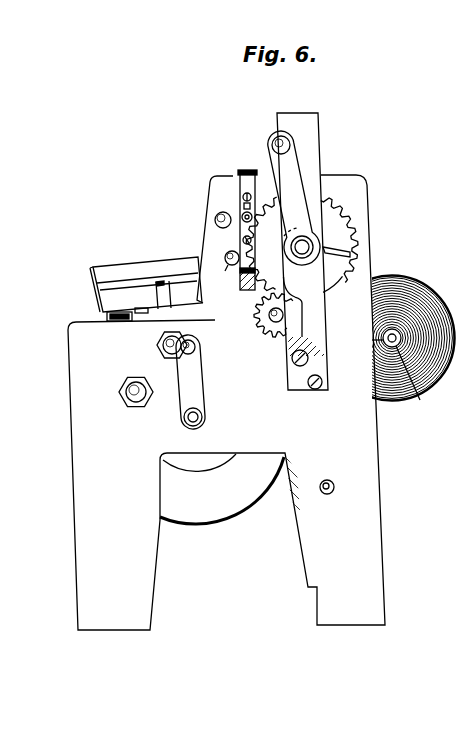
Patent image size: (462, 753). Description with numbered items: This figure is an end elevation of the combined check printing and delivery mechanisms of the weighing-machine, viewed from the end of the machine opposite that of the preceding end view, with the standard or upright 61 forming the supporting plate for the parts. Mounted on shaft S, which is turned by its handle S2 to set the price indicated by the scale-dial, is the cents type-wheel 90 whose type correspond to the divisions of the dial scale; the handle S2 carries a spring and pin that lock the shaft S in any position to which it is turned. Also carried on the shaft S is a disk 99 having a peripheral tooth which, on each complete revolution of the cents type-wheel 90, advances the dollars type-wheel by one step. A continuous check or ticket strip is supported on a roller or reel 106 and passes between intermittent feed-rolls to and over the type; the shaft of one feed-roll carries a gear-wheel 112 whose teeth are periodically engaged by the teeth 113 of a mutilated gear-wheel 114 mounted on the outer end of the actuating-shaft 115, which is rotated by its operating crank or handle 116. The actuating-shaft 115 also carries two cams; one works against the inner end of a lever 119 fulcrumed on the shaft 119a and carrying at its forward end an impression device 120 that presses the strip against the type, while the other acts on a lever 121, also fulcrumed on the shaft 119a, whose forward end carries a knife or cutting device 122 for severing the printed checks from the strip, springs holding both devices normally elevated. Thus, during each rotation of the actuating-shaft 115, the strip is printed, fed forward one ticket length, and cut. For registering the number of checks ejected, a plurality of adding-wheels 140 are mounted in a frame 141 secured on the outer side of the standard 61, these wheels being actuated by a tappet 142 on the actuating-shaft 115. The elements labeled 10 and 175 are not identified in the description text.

The standard 61 is at (368, 514).
The spiral motor spring 10 is at (433, 378).
The roller or reel 106 is at (420, 401).
The guide bar 175 is at (303, 120).
The operating crank or handle 116 is at (297, 146).
The actuating-shaft 115 is at (300, 257).
The teeth 113 is at (328, 198).
The mutilated gear-wheel 114 is at (330, 277).
The tappet 142 is at (333, 250).
The gear-wheel 112 is at (265, 328).
The frame 141 is at (240, 195).
The adding-wheels 140 is at (238, 229).
The shaft 119a is at (223, 271).
The lever 119 is at (178, 295).
The impression device 120 is at (156, 294).
The lever 121 is at (131, 268).
The knife or cutting device 122 is at (96, 295).
The shaft S is at (204, 422).
The handle S2 is at (199, 350).
The disk 99 is at (188, 462).
The cents type-wheel 90 is at (218, 511).